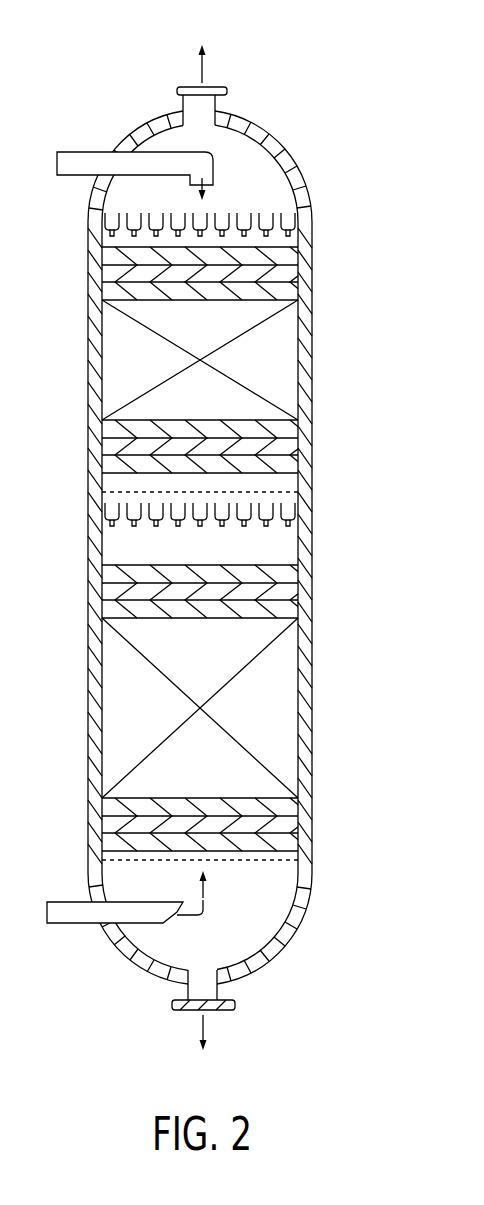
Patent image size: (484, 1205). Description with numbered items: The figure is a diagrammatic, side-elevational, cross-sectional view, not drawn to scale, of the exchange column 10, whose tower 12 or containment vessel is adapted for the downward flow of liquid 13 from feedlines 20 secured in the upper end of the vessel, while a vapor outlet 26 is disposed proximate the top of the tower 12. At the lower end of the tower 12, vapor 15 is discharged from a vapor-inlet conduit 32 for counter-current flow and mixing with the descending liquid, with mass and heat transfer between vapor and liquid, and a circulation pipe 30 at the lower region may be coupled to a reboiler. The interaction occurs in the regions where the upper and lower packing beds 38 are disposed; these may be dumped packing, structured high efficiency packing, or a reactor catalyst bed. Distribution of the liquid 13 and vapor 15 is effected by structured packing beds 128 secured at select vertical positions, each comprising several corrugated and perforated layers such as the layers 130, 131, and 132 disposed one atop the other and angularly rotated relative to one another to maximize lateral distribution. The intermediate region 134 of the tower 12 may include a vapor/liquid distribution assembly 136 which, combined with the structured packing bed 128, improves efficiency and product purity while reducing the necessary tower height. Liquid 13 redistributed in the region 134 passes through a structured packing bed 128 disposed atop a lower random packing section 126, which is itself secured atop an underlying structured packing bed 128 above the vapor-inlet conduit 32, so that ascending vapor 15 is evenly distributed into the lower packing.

The exchange column 10 is at (306, 140).
The tower 12 is at (263, 131).
The liquid 13 is at (232, 190).
The vapor 15 is at (207, 906).
The feedlines 20 is at (90, 137).
The vapor outlet 26 is at (231, 100).
The circulation pipe 30 is at (238, 990).
The vapor-inlet conduit 32 is at (72, 926).
The packing bed 38 is at (289, 366).
The lower random packing section 126 is at (107, 704).
The structured packing bed 128 is at (298, 270).
The corrugated layer 130 is at (106, 255).
The corrugated layer 131 is at (108, 272).
The corrugated layer 132 is at (106, 295).
The intermediate region 134 is at (285, 546).
The vapor/liquid distribution assembly 136 is at (300, 221).